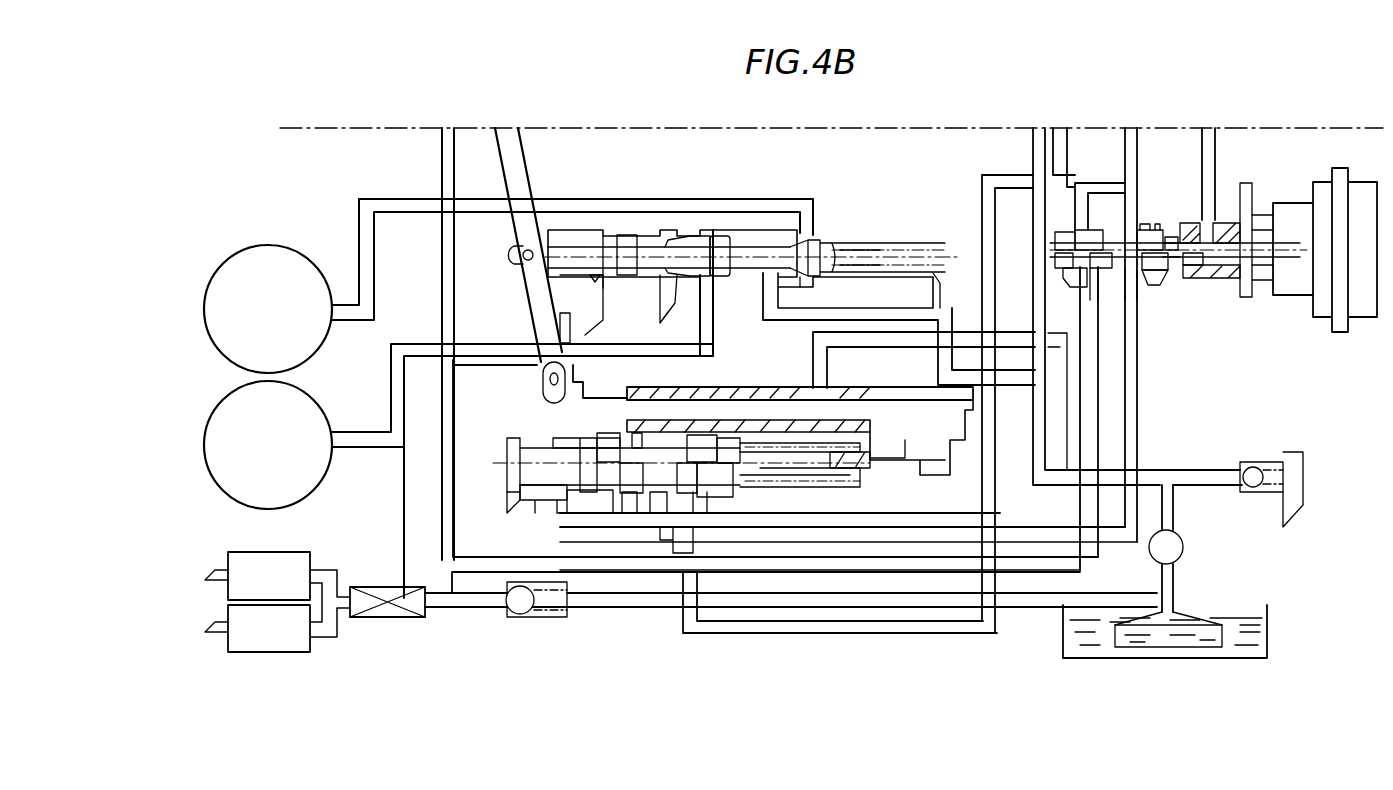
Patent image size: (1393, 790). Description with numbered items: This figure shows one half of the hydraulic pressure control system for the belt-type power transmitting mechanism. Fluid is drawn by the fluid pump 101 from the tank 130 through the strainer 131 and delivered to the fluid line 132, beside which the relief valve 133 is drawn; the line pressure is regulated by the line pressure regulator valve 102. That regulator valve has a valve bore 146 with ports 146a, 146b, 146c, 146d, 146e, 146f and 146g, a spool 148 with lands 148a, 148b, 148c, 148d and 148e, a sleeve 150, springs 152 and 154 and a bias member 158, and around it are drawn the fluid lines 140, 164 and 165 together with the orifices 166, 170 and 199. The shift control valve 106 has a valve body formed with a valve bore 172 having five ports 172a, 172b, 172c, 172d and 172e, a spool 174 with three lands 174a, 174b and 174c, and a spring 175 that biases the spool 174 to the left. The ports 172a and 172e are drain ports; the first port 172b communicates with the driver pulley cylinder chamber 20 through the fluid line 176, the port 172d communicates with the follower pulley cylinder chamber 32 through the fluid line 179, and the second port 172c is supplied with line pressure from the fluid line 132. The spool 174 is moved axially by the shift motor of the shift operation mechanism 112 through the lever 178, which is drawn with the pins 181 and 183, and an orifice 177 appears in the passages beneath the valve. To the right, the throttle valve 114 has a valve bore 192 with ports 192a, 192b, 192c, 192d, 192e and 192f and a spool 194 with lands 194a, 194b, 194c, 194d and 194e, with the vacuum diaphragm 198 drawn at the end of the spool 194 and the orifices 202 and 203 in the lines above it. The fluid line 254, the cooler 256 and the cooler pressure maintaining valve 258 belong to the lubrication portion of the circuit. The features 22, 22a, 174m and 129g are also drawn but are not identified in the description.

The follower pulley cylinder chamber 32 is at (318, 354).
The driver pulley cylinder chamber 20 is at (320, 488).
The fluid line 179 is at (410, 214).
The fluid line 254 is at (440, 268).
The fluid line 176 is at (418, 367).
The lever 178 is at (510, 170).
The pin 183 is at (540, 392).
The pin 181 is at (522, 254).
The shift operation mechanism 112 is at (497, 266).
The valve bore 172 is at (880, 256).
The port 172a is at (668, 288).
The port 172b is at (711, 290).
The port 172c is at (760, 308).
The port 172d is at (806, 288).
The port 172e is at (938, 276).
The spool 174 is at (567, 246).
The land 174a is at (627, 238).
The spool land 174m is at (718, 250).
The land 174b is at (735, 240).
The land 174c is at (820, 238).
The spring 175 is at (926, 248).
The shift control valve 106 is at (828, 200).
The plate 22 is at (600, 292).
The pin 22a is at (572, 300).
The orifice 177 is at (672, 290).
The spring 152 is at (800, 398).
The bias member 158 is at (973, 417).
The line pressure regulator valve 102 is at (490, 540).
The spool 148 is at (518, 478).
The land 148b is at (520, 458).
The port 146a is at (515, 500).
The land 148a is at (538, 512).
The port 146b is at (560, 517).
The orifice 166 is at (575, 520).
The valve bore 146 is at (575, 466).
The port 146c is at (612, 430).
The land 148c is at (635, 440).
The land 148d is at (684, 462).
The port 146g is at (712, 436).
The land 148e is at (727, 490).
The fluid line 164 is at (612, 558).
The orifice 199 is at (673, 555).
The orifice 170 is at (716, 505).
The port 146f is at (681, 525).
The port 146d is at (620, 485).
The port 146e is at (653, 485).
The sleeve 150 is at (895, 455).
The spring 154 is at (892, 462).
The fluid line 132 is at (880, 526).
The fluid line 140 is at (1125, 552).
The relief valve 133 is at (1262, 460).
The fluid pump 101 is at (1184, 540).
The tank 130 is at (1272, 622).
The strainer 131 is at (1180, 612).
The cooler 256 is at (390, 585).
The cooler pressure maintaining valve 258 is at (512, 607).
The fluid line 165 is at (738, 638).
The orifice 202 is at (1085, 212).
The orifice 203 is at (1218, 185).
The valve bore 192 is at (1128, 228).
The land 194b is at (1060, 240).
The land 194a is at (1082, 238).
The spool 194 is at (1085, 258).
The land 194d is at (1172, 236).
The land 194c is at (1150, 238).
The port 192f is at (1205, 265).
The bearing 129g is at (1210, 278).
The land 194e is at (1225, 240).
The vacuum diaphragm 198 is at (1354, 170).
The port 192a is at (1058, 283).
The port 192b is at (1078, 288).
The port 192c is at (1103, 302).
The port 192e is at (1153, 287).
The port 192d is at (1130, 302).
The throttle valve 114 is at (1205, 340).